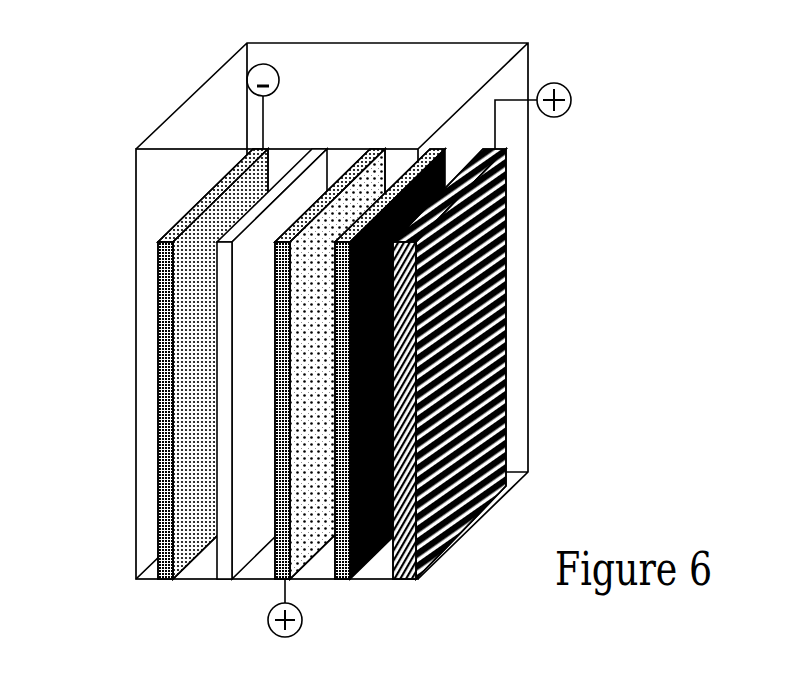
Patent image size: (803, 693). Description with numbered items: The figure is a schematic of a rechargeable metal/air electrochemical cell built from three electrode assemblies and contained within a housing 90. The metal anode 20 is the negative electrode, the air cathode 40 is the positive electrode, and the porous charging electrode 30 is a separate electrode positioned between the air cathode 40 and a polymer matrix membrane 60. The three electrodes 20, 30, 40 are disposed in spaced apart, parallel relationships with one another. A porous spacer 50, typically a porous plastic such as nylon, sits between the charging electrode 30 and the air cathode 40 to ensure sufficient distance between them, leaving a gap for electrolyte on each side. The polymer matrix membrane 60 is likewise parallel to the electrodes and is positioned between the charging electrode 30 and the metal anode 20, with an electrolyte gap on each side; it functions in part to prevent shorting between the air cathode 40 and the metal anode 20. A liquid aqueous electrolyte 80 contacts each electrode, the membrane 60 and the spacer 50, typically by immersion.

The metal anode 20 is at (158, 520).
The charging electrode 30 is at (380, 148).
The air cathode 40 is at (470, 468).
The porous spacer 50 is at (341, 580).
The polymer matrix membrane 60 is at (225, 580).
The liquid electrolyte 80 is at (147, 430).
The housing 90 is at (136, 312).